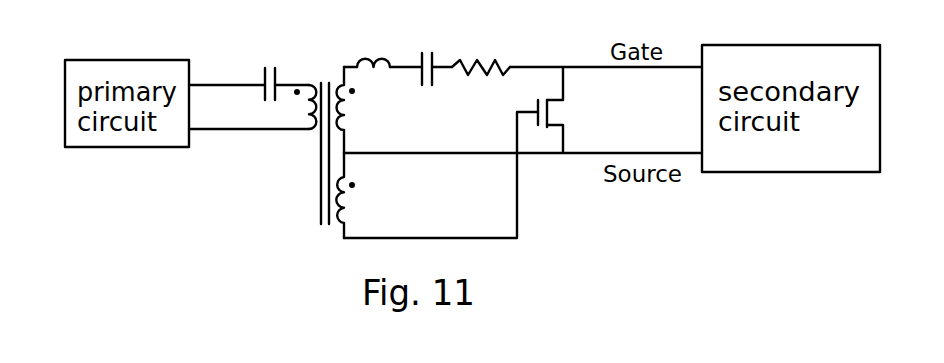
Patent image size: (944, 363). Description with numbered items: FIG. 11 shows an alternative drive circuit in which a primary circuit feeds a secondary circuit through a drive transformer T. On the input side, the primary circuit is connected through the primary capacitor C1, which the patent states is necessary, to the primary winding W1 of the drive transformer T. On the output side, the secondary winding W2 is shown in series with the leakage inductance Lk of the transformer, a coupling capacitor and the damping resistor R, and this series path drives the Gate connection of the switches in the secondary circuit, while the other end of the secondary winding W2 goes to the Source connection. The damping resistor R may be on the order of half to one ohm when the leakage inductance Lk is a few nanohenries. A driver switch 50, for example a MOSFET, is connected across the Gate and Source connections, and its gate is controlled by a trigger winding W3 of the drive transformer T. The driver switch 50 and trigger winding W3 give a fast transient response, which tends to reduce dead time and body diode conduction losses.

The primary capacitor C1 is at (265, 67).
The primary winding W1 is at (302, 117).
The secondary winding W2 is at (345, 116).
The trigger winding W3 is at (345, 207).
The drive transformer T is at (318, 193).
The leakage inductance Lk is at (385, 62).
The damping resistor R is at (490, 75).
The driver switch 50 is at (553, 125).